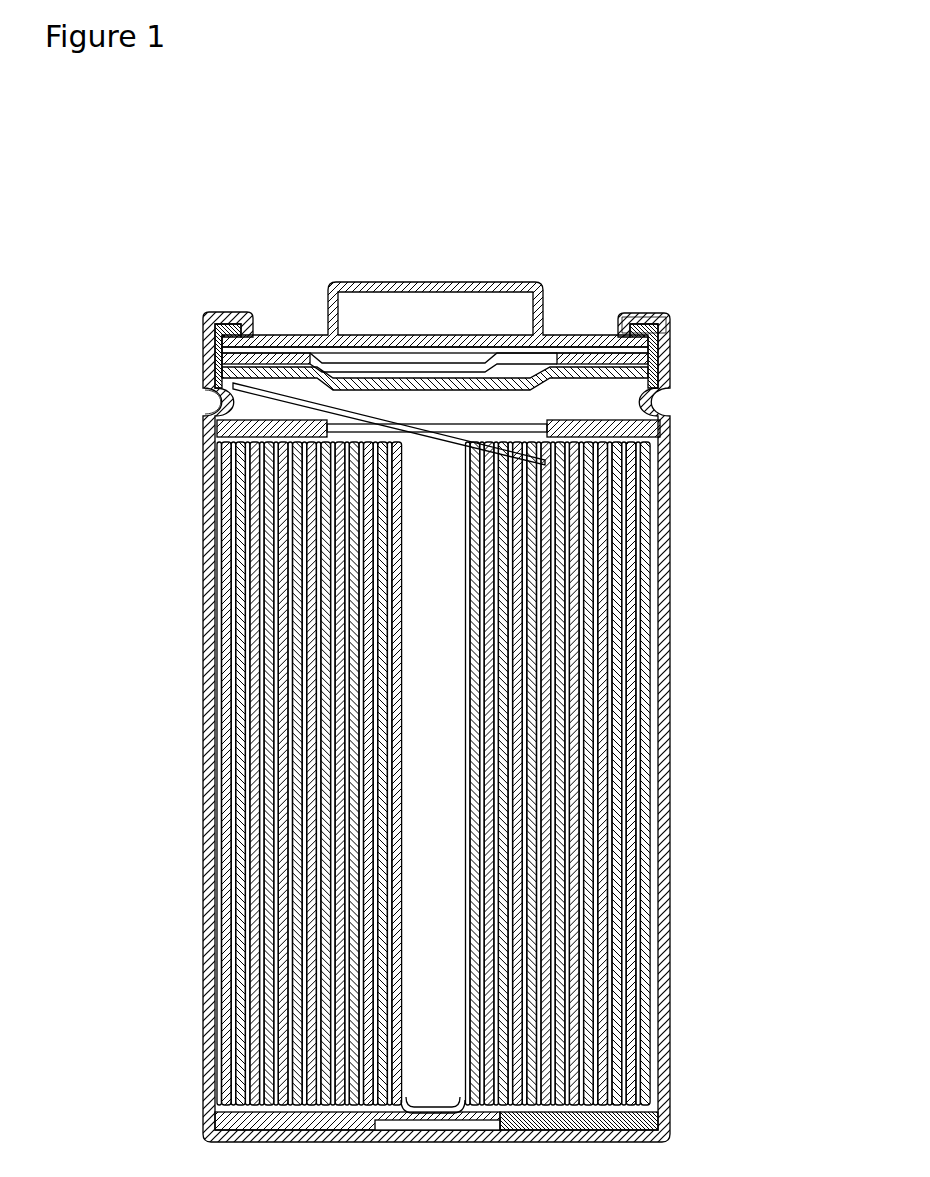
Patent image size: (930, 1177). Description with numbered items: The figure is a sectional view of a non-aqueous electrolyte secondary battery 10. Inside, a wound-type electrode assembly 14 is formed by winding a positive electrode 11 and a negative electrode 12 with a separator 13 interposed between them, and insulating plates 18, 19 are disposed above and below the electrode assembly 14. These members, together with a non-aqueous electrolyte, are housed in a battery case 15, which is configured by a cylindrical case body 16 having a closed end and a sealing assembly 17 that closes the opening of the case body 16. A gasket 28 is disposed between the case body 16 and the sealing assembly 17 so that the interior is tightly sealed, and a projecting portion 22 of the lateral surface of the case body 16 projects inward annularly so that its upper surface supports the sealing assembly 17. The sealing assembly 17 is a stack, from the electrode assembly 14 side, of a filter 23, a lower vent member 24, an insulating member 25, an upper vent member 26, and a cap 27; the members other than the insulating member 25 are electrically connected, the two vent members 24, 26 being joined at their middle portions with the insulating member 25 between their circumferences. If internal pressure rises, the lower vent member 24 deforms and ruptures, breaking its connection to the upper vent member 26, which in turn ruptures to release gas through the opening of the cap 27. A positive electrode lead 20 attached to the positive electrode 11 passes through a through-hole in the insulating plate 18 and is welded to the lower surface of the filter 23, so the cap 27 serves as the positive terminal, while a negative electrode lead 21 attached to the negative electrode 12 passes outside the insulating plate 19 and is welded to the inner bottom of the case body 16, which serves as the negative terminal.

The non-aqueous electrolyte secondary battery 10 is at (684, 163).
The positive electrode 11 is at (665, 835).
The negative electrode 12 is at (665, 862).
The separator 13 is at (665, 893).
The wound-type electrode assembly 14 is at (770, 830).
The battery case 15 is at (653, 228).
The case body 16 is at (634, 314).
The sealing assembly 17 is at (571, 347).
The insulating plate 18 is at (662, 432).
The insulating plate 19 is at (670, 1136).
The positive electrode lead 20 is at (233, 385).
The negative electrode lead 21 is at (215, 1119).
The projecting portion 22 is at (218, 402).
The filter 23 is at (435, 380).
The lower vent member 24 is at (337, 335).
The insulating member 25 is at (283, 335).
The upper vent member 26 is at (366, 347).
The cap 27 is at (505, 283).
The gasket 28 is at (668, 337).